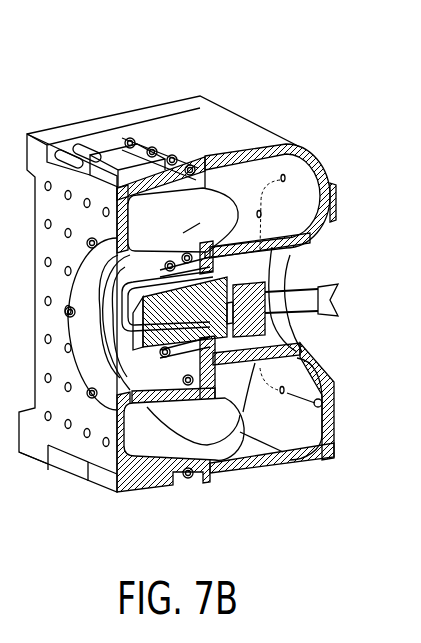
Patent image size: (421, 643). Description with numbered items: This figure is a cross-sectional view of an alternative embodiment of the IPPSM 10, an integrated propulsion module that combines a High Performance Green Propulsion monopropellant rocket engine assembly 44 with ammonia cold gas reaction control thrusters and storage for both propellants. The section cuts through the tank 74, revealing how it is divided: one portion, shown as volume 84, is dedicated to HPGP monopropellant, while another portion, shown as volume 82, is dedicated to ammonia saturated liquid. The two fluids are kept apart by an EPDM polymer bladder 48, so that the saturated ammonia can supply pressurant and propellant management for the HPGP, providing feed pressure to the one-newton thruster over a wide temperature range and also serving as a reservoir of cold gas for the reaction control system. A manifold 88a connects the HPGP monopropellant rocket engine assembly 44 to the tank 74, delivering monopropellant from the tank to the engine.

The IPPSM 10 is at (135, 85).
The volume 82 is at (160, 217).
The tank 74 is at (207, 160).
The volume 84 is at (323, 195).
The manifold 88a is at (329, 229).
The HPGP monopropellant rocket engine assembly 44 is at (282, 307).
The EPDM polymer bladder 48 is at (240, 432).